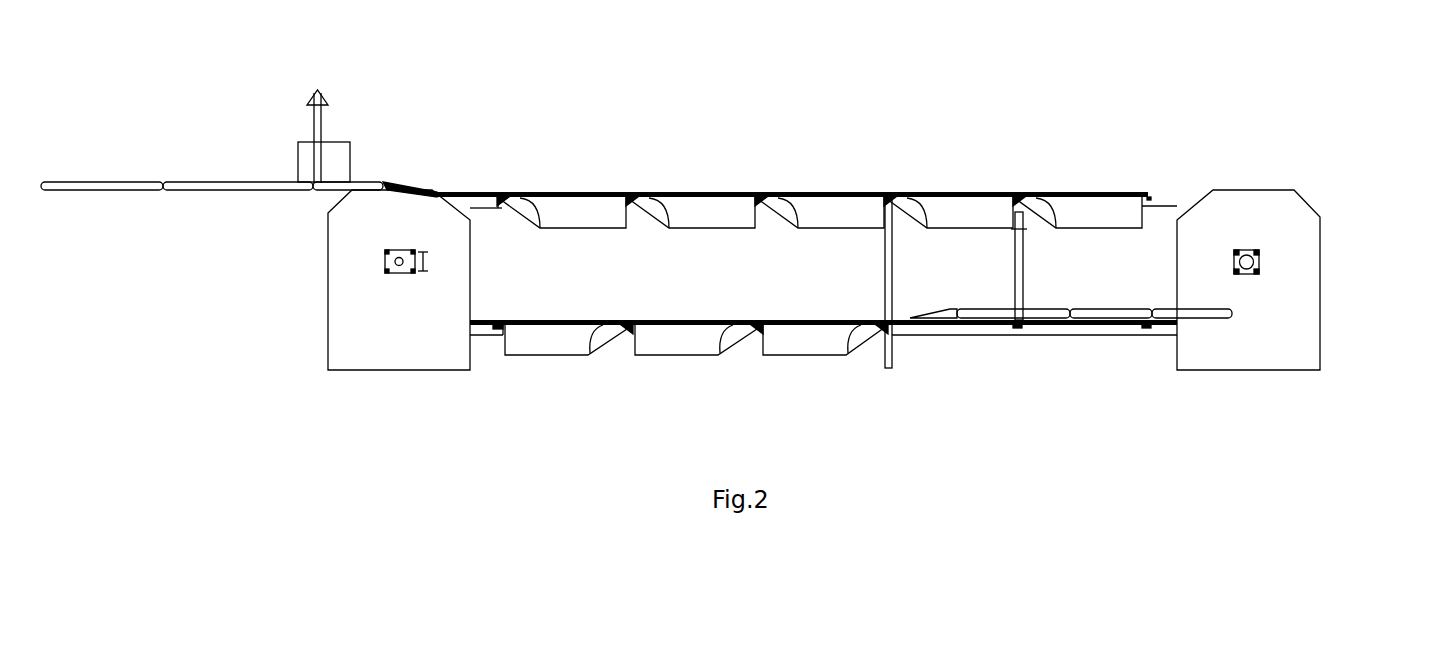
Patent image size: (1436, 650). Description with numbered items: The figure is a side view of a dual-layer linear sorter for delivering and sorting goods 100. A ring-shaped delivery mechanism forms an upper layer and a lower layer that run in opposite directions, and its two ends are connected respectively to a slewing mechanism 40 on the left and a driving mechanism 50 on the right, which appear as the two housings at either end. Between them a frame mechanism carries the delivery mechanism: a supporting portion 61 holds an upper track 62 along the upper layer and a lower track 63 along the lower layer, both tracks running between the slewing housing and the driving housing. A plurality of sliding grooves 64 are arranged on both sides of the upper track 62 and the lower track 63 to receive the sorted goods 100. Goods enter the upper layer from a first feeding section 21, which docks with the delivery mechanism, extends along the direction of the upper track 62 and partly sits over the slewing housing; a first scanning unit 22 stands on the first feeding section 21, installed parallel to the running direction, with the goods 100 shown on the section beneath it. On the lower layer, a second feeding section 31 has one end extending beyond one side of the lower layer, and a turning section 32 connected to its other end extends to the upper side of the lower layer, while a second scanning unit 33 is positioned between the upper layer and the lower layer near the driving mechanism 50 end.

The first feeding section 21 is at (207, 183).
The first scanning unit 22 is at (318, 87).
The goods 100 is at (330, 155).
The slewing mechanism 40 is at (327, 307).
The driving mechanism 50 is at (1332, 297).
The upper track 62 is at (475, 202).
The sliding groove 64 is at (567, 210).
The lower track 63 is at (492, 335).
The supporting portion 61 is at (887, 267).
The second scanning unit 33 is at (1022, 273).
The turning section 32 is at (977, 313).
The second feeding section 31 is at (1218, 315).